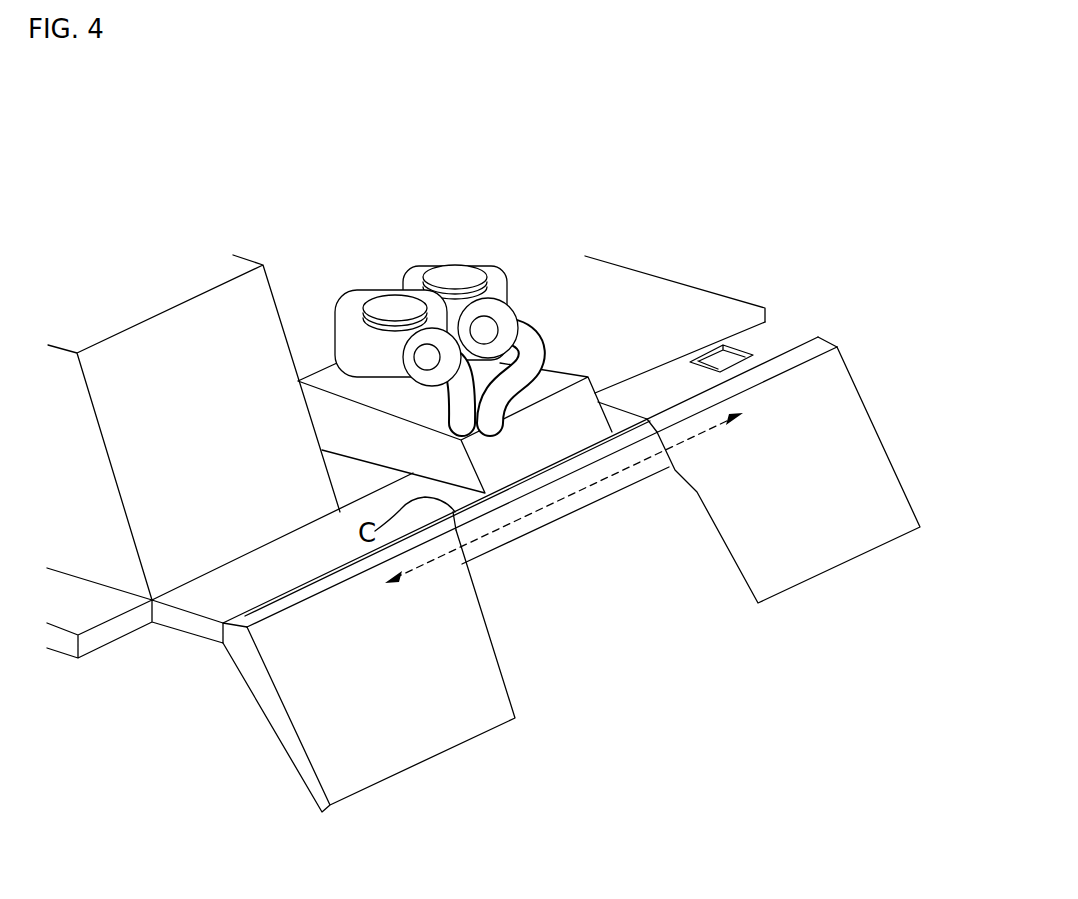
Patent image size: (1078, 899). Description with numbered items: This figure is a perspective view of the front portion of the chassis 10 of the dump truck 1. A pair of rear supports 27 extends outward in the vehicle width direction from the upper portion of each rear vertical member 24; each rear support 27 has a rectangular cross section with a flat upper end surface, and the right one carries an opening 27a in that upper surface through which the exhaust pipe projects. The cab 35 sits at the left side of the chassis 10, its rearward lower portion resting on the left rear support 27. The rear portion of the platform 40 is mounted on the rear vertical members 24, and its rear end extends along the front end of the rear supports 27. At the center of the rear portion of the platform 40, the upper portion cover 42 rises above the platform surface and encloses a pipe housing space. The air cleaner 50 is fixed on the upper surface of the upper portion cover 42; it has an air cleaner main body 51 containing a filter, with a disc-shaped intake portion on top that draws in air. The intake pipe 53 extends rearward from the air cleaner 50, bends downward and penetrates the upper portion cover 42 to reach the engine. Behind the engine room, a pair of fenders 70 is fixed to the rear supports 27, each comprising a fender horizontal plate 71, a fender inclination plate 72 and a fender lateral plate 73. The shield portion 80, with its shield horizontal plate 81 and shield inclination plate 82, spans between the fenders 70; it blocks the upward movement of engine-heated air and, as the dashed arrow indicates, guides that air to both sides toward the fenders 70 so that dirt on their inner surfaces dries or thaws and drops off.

The dump truck 1 is at (724, 133).
The chassis 10 is at (683, 207).
The rear vertical member 24 is at (390, 500).
The rear support 27 is at (490, 475).
The opening 27a is at (725, 351).
The cab 35 is at (172, 337).
The platform 40 is at (628, 283).
The upper portion cover 42 is at (547, 381).
The air cleaner 50 is at (410, 277).
The air cleaner main body 51 is at (405, 278).
The intake pipe 53 is at (510, 327).
The fender 70 is at (502, 568).
The fender horizontal plate 71 is at (247, 618).
The fender inclination plate 72 is at (317, 710).
The fender lateral plate 73 is at (292, 743).
The shield portion 80 is at (564, 533).
The shield horizontal plate 81 is at (545, 480).
The shield inclination plate 82 is at (613, 492).